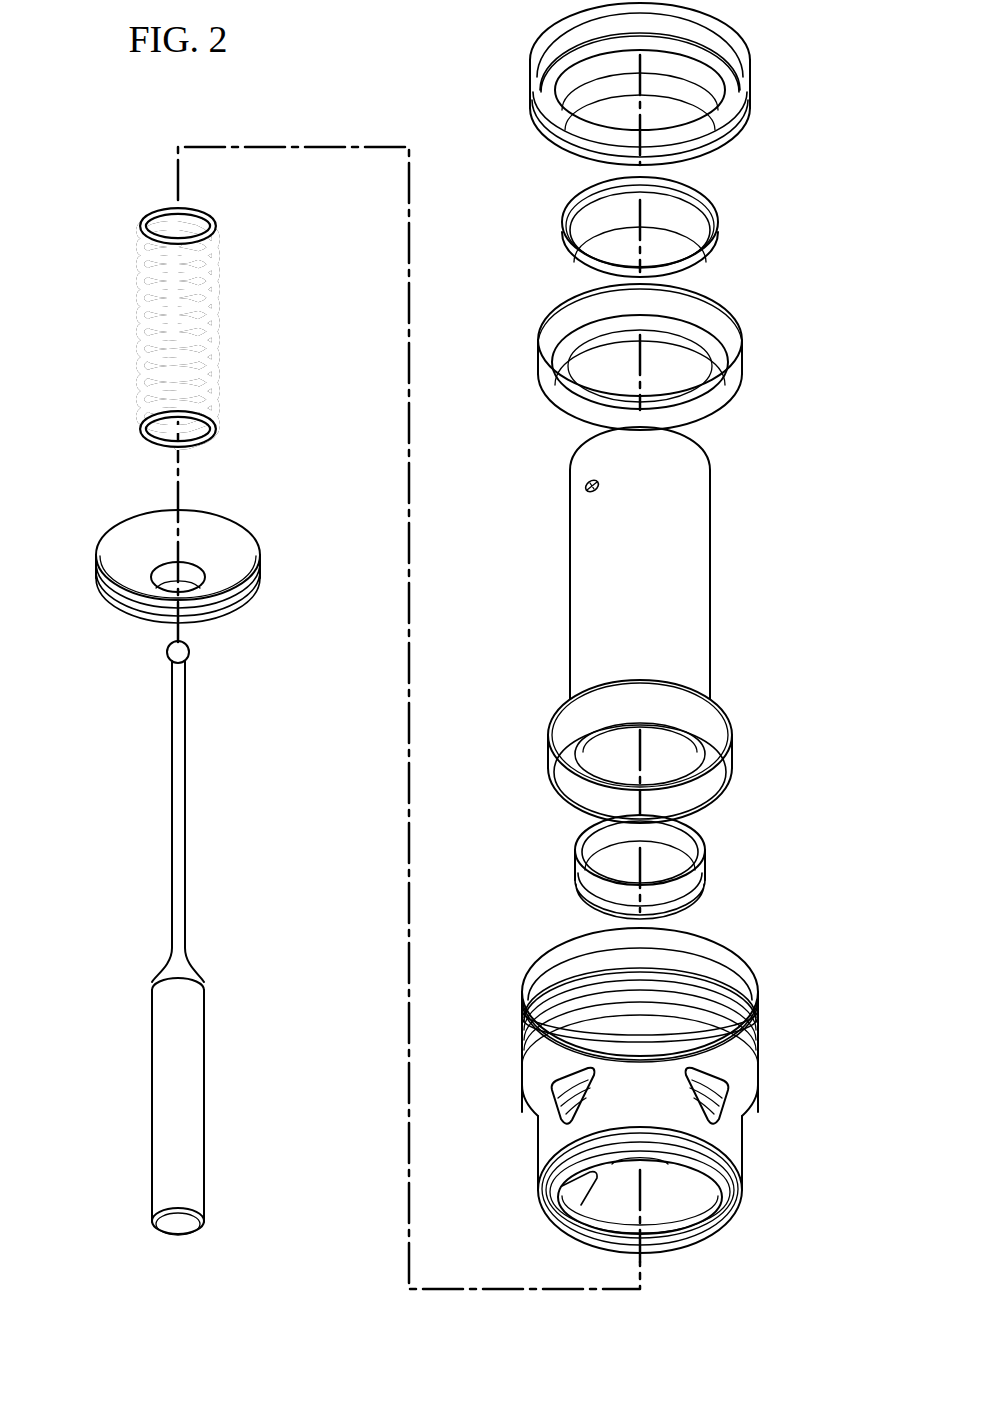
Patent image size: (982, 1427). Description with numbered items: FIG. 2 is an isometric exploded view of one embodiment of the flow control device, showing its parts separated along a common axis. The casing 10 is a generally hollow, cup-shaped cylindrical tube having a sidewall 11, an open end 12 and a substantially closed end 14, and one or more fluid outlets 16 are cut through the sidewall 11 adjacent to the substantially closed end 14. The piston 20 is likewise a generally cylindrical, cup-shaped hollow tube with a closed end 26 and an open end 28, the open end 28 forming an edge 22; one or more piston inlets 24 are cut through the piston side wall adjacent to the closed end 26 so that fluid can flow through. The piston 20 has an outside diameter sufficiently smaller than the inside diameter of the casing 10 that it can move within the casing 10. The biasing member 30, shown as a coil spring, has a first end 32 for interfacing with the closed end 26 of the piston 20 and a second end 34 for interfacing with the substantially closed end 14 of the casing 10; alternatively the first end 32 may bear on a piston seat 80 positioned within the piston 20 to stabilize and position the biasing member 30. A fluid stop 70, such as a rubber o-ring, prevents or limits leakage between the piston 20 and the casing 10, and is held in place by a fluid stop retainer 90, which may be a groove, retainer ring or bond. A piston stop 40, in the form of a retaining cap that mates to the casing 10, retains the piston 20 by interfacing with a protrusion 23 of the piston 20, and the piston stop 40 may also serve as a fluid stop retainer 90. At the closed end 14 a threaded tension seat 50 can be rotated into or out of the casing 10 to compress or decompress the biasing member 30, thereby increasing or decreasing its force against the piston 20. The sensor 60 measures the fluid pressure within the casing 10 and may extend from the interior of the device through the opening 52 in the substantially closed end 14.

The casing 10 is at (671, 1122).
The sidewall 11 is at (742, 1152).
The open end 12 is at (758, 1002).
The substantially closed end 14 is at (146, 610).
The fluid outlets 16 is at (588, 1088).
The piston 20 is at (650, 554).
The edge 22 is at (660, 764).
The protrusion 23 is at (716, 706).
The piston inlets 24 is at (586, 487).
The closed end 26 is at (703, 445).
The open end 28 is at (566, 785).
The biasing member 30 is at (142, 280).
The first end 32 is at (168, 212).
The second end 34 is at (162, 452).
The piston stop 40 is at (744, 64).
The tension seat 50 is at (147, 589).
The opening 52 is at (195, 592).
The sensor 60 is at (153, 1085).
The fluid stop 70 is at (744, 350).
The piston seat 80 is at (706, 866).
The fluid stop retainer 90 is at (718, 224).